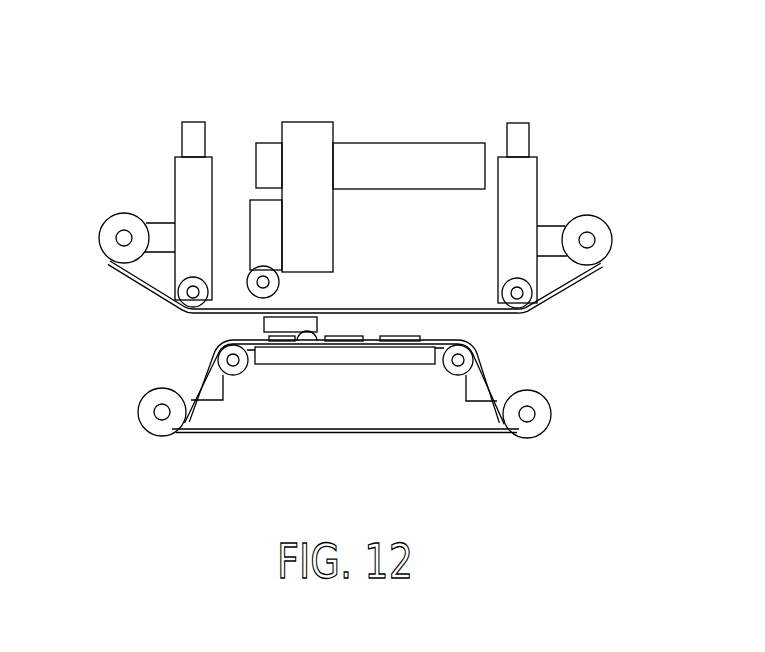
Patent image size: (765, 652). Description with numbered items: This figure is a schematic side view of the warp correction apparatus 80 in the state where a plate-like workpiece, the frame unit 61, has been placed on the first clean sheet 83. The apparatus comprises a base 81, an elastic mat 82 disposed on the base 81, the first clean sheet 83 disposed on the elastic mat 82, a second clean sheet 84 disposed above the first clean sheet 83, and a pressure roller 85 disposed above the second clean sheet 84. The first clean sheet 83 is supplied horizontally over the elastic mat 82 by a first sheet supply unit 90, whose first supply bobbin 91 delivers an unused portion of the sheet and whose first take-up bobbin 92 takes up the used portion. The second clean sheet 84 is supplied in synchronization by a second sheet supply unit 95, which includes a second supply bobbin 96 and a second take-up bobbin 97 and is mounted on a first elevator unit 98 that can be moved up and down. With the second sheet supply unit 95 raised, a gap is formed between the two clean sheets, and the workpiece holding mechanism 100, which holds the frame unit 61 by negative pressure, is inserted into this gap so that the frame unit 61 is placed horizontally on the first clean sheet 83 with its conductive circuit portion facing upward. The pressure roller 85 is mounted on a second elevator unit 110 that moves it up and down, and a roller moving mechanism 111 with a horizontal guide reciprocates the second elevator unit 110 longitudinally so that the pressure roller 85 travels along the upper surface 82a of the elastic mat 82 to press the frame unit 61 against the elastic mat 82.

The warp correction apparatus 80 is at (446, 91).
The base 81 is at (342, 417).
The elastic mat 82 is at (403, 353).
The upper surface 82a is at (295, 340).
The first clean sheet 83 is at (445, 336).
The second clean sheet 84 is at (470, 313).
The pressure roller 85 is at (280, 284).
The first sheet supply unit 90 is at (557, 438).
The first supply bobbin 91 is at (138, 422).
The first take-up bobbin 92 is at (553, 410).
The second sheet supply unit 95 is at (618, 206).
The second supply bobbin 96 is at (112, 230).
The second take-up bobbin 97 is at (613, 237).
The first elevator unit 98 is at (183, 176).
The workpiece holding mechanism 100 is at (265, 322).
The second elevator unit 110 is at (255, 228).
The roller moving mechanism 111 is at (385, 153).
The frame unit 61 is at (353, 335).